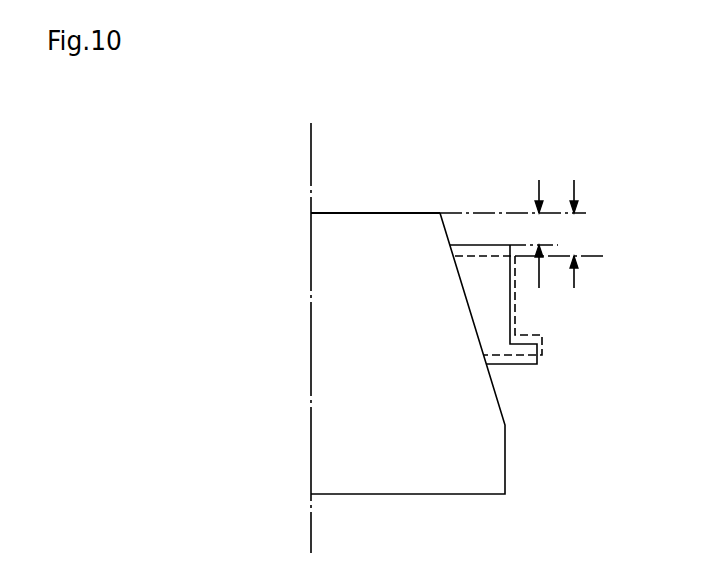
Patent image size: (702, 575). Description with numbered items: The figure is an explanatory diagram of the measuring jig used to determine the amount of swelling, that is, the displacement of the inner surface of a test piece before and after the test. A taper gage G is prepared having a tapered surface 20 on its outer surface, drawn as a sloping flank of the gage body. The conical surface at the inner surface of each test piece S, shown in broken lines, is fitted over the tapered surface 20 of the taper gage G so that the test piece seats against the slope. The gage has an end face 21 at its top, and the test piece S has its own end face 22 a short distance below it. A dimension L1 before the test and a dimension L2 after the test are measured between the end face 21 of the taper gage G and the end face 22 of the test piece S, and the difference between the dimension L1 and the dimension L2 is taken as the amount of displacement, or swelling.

The taper gage G is at (337, 423).
The tapered surface 20 is at (497, 400).
The end face 21 is at (388, 213).
The end face 22 is at (473, 245).
The test piece S is at (495, 313).
The dimension L1 is at (539, 231).
The dimension L2 is at (575, 229).